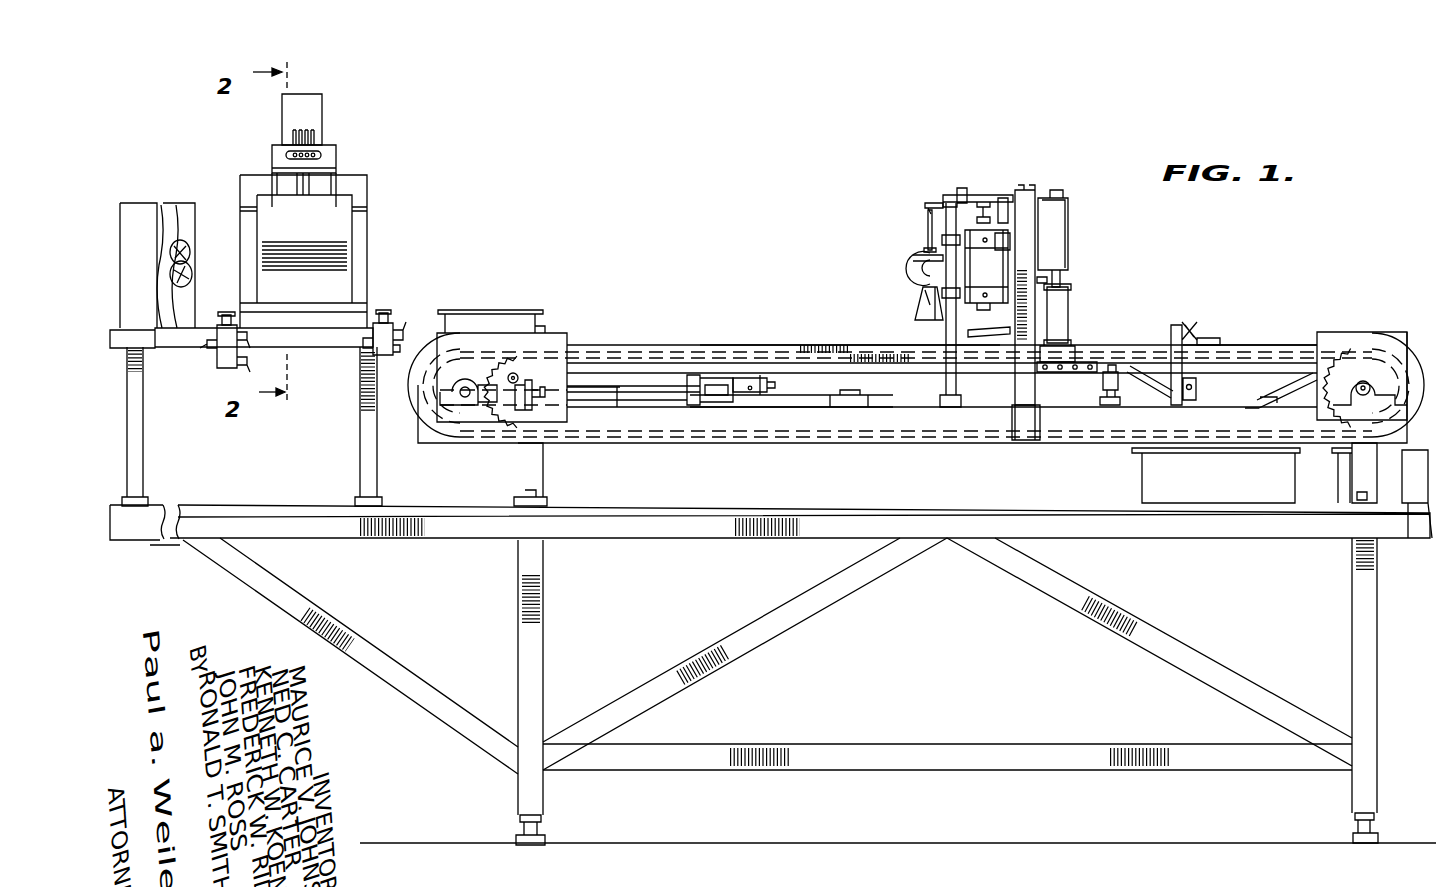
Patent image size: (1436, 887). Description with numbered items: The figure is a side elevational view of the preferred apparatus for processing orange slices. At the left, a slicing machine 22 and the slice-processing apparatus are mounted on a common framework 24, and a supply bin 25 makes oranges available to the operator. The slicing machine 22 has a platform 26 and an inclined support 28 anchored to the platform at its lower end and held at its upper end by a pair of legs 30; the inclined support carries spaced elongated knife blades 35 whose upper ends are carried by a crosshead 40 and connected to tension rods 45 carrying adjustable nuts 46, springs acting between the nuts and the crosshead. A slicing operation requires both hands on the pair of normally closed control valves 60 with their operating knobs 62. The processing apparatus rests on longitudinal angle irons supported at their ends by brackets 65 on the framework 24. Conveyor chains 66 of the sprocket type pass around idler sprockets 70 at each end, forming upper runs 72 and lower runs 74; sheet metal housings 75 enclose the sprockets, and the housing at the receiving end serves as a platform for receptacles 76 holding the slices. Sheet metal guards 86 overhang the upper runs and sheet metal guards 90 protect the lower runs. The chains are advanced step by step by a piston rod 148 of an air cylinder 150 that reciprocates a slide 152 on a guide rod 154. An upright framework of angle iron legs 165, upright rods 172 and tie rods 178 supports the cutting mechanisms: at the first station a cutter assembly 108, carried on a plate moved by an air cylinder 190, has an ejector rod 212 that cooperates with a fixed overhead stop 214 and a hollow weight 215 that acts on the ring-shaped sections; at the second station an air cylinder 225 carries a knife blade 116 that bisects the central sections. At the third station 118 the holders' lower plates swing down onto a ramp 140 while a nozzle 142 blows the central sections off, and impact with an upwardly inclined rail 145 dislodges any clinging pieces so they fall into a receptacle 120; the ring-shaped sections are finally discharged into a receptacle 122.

The slicing machine 22 is at (375, 185).
The framework 24 is at (511, 578).
The supply bin 25 is at (178, 208).
The platform 26 is at (345, 341).
The inclined support 28 is at (310, 102).
The legs 30 is at (350, 267).
The knife blades 35 is at (306, 196).
The crosshead 40 is at (326, 153).
The tension rods 45 is at (293, 130).
The adjustable nuts 46 is at (314, 136).
The control valves 60 is at (222, 368).
The operating knobs 62 is at (227, 313).
The brackets 65 is at (545, 487).
The conveyor chains 66 is at (1238, 340).
The idler sprockets 70 is at (437, 388).
The upper runs 72 is at (660, 344).
The lower runs 74 is at (692, 447).
The sheet metal housings 75 is at (560, 338).
The receptacles 76 is at (508, 312).
The sheet metal guards 86 is at (808, 345).
The sheet metal guards 90 is at (1010, 425).
The cutter assembly 108 is at (900, 292).
The knife blade 116 is at (1078, 332).
The third station 118 is at (1212, 325).
The receptacle 120 is at (1228, 491).
The receptacle 122 is at (1411, 505).
The ramp 140 is at (1160, 396).
The nozzle 142 is at (1198, 323).
The rail 145 is at (1267, 395).
The piston rod 148 is at (712, 378).
The air cylinder 150 is at (617, 392).
The slide 152 is at (735, 400).
The guide rod 154 is at (845, 400).
The angle iron legs 165 is at (1027, 193).
The rods 172 is at (947, 395).
The tie rods 178 is at (975, 192).
The air cylinder 190 is at (990, 267).
The rod 212 is at (928, 228).
The overhead stop 214 is at (933, 203).
The hollow weight 215 is at (918, 312).
The air cylinder 225 is at (1070, 250).